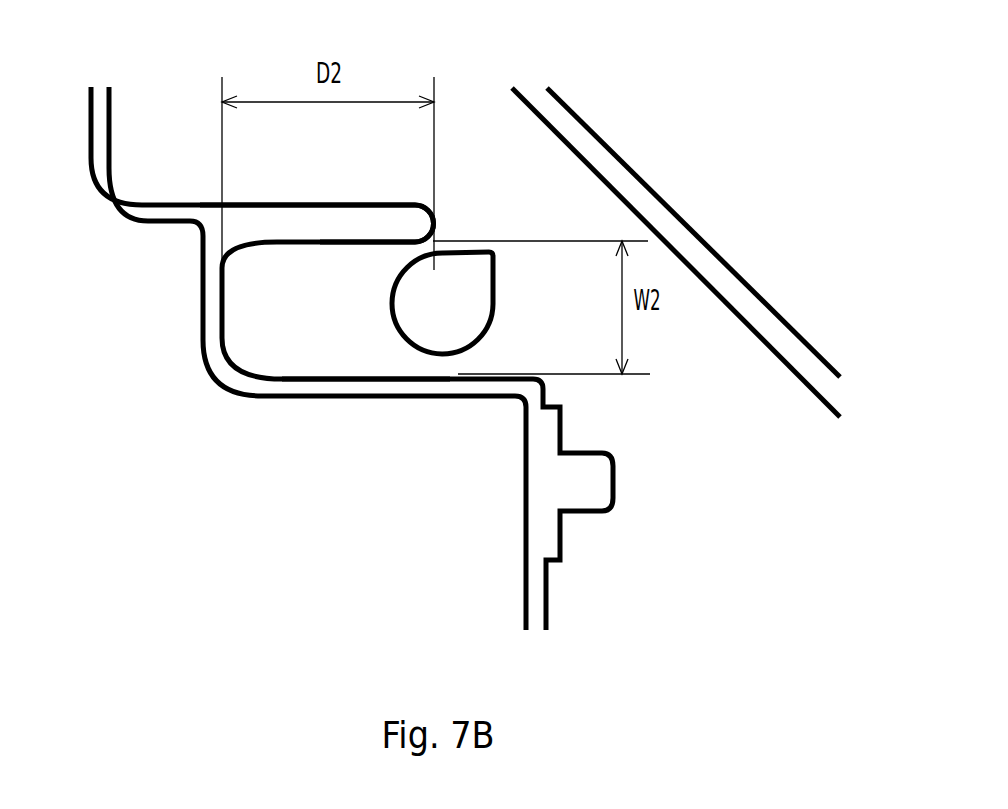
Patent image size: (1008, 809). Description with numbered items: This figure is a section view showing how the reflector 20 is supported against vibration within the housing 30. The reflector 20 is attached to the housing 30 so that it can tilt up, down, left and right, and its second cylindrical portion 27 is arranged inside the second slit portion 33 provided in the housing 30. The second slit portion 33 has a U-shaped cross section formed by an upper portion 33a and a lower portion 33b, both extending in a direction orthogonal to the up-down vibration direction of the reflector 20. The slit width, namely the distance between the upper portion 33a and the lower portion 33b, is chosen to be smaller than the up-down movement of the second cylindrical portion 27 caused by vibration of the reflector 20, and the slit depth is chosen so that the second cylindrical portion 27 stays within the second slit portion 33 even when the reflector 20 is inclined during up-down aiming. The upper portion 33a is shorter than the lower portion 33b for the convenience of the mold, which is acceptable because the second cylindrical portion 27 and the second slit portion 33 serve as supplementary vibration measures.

The reflector 20 is at (692, 255).
The second cylindrical portion 27 is at (465, 268).
The housing 30 is at (101, 96).
The second slit portion 33 is at (362, 210).
The upper portion 33a is at (277, 207).
The lower portion 33b is at (353, 399).